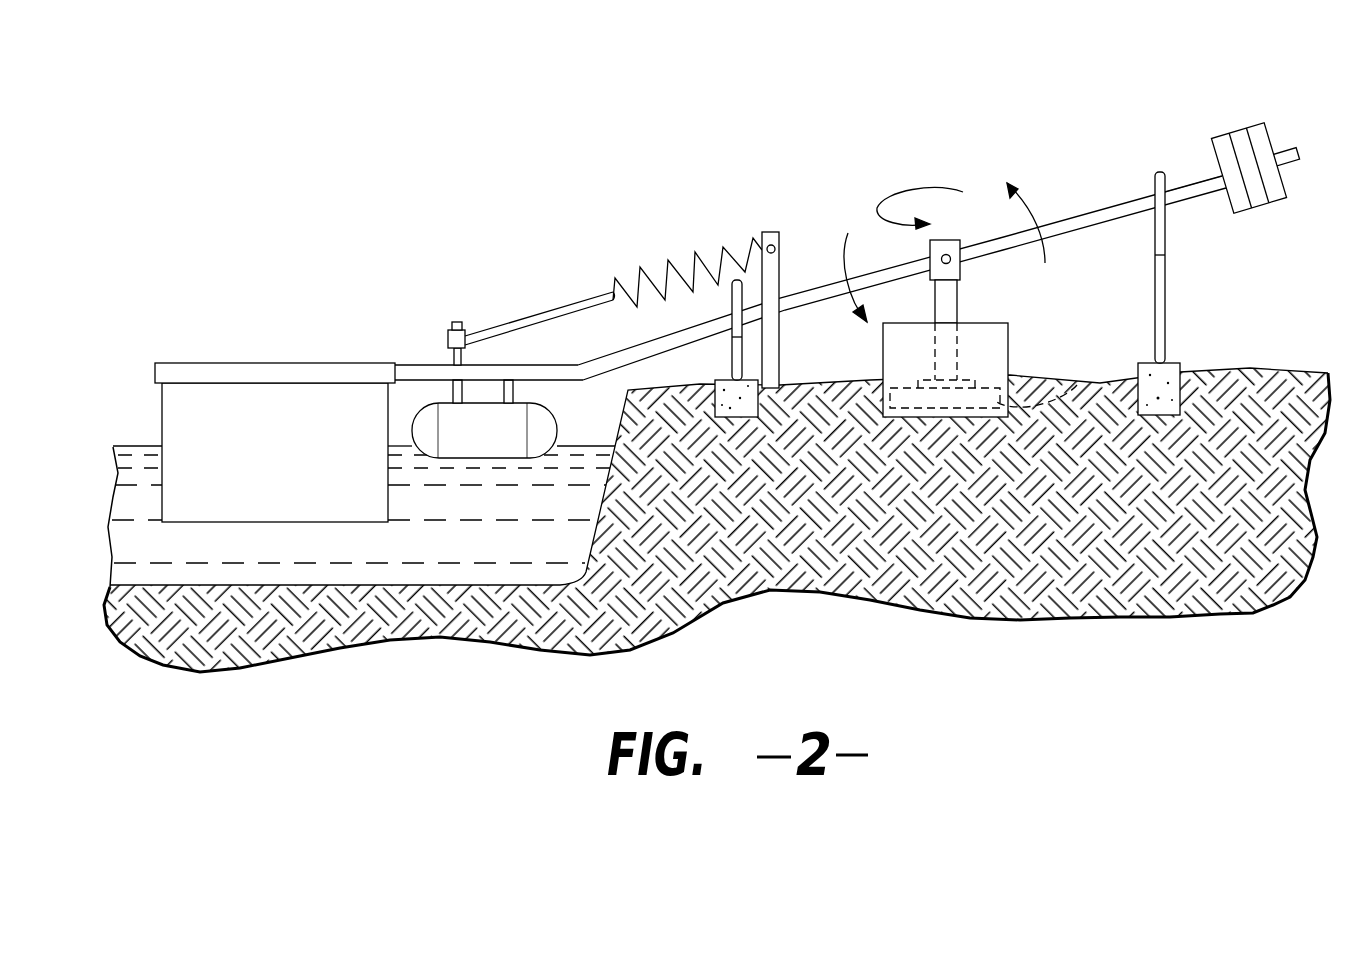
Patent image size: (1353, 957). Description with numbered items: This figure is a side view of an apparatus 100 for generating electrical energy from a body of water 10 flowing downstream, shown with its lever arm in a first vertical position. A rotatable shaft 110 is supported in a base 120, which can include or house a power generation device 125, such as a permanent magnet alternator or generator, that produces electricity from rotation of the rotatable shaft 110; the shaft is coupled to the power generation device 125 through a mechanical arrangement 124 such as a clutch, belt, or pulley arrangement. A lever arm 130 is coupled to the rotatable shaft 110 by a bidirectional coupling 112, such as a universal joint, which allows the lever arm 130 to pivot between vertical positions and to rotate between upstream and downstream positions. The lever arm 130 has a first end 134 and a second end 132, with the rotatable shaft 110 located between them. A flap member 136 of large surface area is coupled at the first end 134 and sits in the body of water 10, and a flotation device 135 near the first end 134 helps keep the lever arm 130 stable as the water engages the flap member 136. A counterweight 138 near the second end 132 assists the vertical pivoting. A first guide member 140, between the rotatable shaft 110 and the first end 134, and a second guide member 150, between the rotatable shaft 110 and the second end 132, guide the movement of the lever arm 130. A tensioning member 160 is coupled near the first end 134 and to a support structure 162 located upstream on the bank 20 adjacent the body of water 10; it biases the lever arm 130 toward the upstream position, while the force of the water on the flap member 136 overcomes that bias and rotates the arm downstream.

The apparatus 100 is at (520, 180).
The body of water 10 is at (465, 552).
The bank 20 is at (1093, 512).
The rotatable shaft 110 is at (960, 310).
The bidirectional coupling 112 is at (967, 237).
The base 120 is at (1008, 330).
The mechanical arrangement 124 is at (975, 372).
The power generation device 125 is at (1077, 385).
The lever arm 130 is at (1128, 193).
The second end 132 is at (1195, 175).
The first end 134 is at (423, 363).
The flotation device 135 is at (530, 407).
The flap member 136 is at (160, 415).
The counterweight 138 is at (1273, 136).
The first guide member 140 is at (728, 292).
The second guide member 150 is at (1165, 307).
The tensioning member 160 is at (628, 277).
The support structure 162 is at (780, 366).